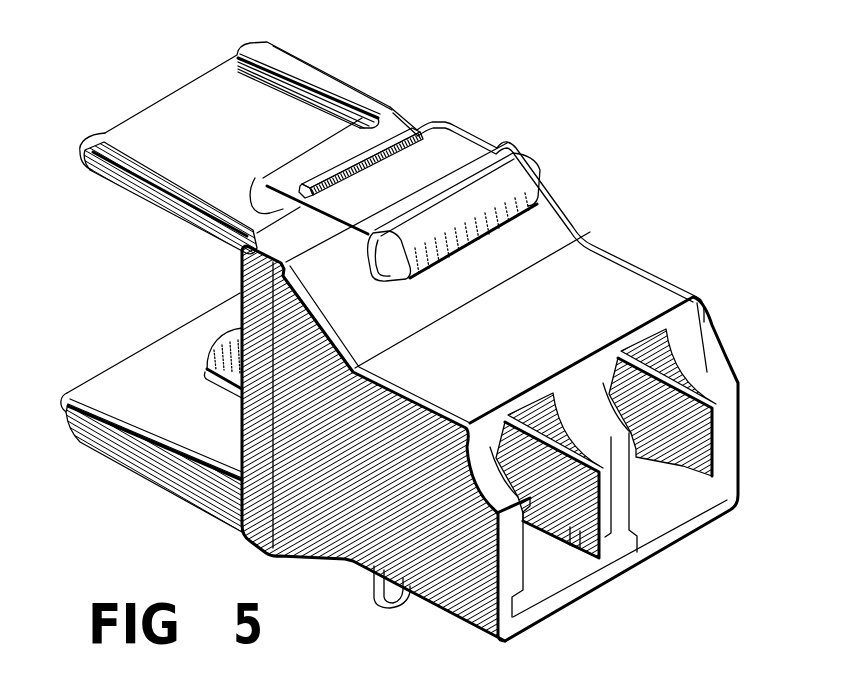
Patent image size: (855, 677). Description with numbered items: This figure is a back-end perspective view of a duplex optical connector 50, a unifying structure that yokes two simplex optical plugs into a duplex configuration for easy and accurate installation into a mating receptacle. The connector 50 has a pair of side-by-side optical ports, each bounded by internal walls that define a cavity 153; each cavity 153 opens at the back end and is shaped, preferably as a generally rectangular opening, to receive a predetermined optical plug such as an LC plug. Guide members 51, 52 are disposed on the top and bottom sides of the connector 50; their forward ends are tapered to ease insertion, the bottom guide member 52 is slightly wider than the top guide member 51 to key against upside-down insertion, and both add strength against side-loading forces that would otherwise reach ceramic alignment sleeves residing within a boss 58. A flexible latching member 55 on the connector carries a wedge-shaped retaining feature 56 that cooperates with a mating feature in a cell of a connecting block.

The duplex optical connector 50 is at (91, 48).
The guide member 51 is at (197, 93).
The guide member 52 is at (130, 370).
The flexible latching member 55 is at (512, 170).
The wedge-shaped retaining feature 56 is at (398, 136).
The boss 58 is at (228, 340).
The cavity 153 is at (646, 515).